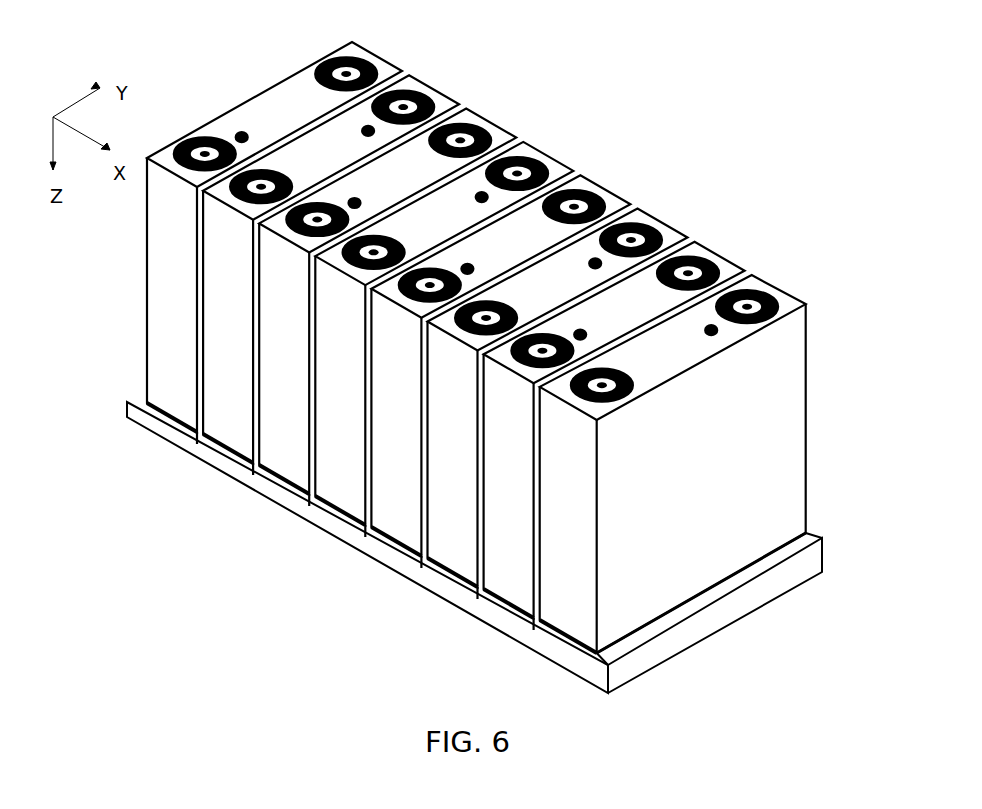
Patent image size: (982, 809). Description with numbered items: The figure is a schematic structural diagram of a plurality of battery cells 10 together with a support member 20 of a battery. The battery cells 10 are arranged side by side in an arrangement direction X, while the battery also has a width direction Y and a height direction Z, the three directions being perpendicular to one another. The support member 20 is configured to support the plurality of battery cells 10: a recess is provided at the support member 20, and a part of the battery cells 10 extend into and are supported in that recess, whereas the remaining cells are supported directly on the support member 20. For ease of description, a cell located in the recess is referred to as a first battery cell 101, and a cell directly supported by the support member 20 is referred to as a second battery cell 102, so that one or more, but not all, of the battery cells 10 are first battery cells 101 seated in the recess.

The battery cell 10 is at (536, 37).
The first battery cell 101 is at (482, 110).
The second battery cell 102 is at (655, 218).
The support member 20 is at (818, 556).